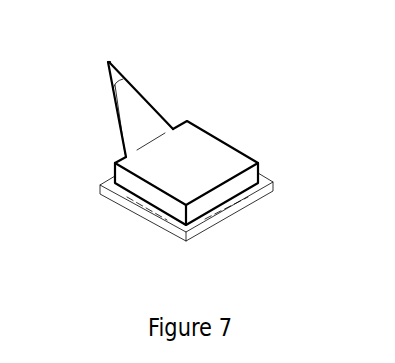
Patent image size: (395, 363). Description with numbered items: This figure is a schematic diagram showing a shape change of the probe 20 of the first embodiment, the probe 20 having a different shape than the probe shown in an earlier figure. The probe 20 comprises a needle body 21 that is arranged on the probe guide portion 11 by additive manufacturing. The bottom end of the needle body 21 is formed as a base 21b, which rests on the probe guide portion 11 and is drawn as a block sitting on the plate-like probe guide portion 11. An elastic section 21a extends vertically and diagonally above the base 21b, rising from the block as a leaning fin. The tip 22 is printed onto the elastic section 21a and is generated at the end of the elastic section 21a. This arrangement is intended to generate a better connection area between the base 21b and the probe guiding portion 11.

The probe guide portion 11 is at (273, 183).
The probe 20 is at (195, 138).
The needle body 21 is at (116, 163).
The elastic section 21a is at (126, 114).
The base 21b is at (240, 163).
The tip 22 is at (106, 62).